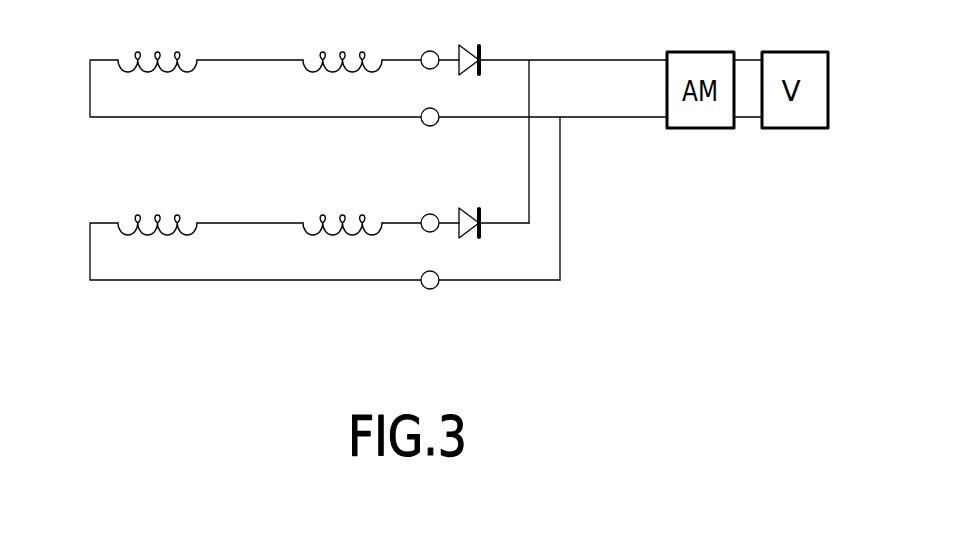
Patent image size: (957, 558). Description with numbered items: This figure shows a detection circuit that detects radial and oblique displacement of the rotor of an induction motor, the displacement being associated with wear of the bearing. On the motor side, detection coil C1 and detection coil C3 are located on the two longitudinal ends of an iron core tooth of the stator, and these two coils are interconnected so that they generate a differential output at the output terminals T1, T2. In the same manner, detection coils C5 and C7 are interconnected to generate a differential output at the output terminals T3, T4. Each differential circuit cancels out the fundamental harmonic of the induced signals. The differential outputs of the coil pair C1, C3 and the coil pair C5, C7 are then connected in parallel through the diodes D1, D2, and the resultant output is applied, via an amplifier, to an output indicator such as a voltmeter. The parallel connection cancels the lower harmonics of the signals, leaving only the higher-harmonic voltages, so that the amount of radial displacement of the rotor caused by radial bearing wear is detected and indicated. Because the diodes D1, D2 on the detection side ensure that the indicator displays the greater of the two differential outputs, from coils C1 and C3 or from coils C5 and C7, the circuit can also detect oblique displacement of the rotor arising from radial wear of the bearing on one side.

The detection coil C1 is at (140, 58).
The detection coil C3 is at (345, 58).
The detection coil C5 is at (140, 220).
The detection coil C7 is at (345, 220).
The output terminal T1 is at (428, 50).
The output terminal T2 is at (423, 108).
The output terminal T3 is at (428, 213).
The output terminal T4 is at (426, 290).
The diode D1 is at (465, 48).
The diode D2 is at (465, 212).